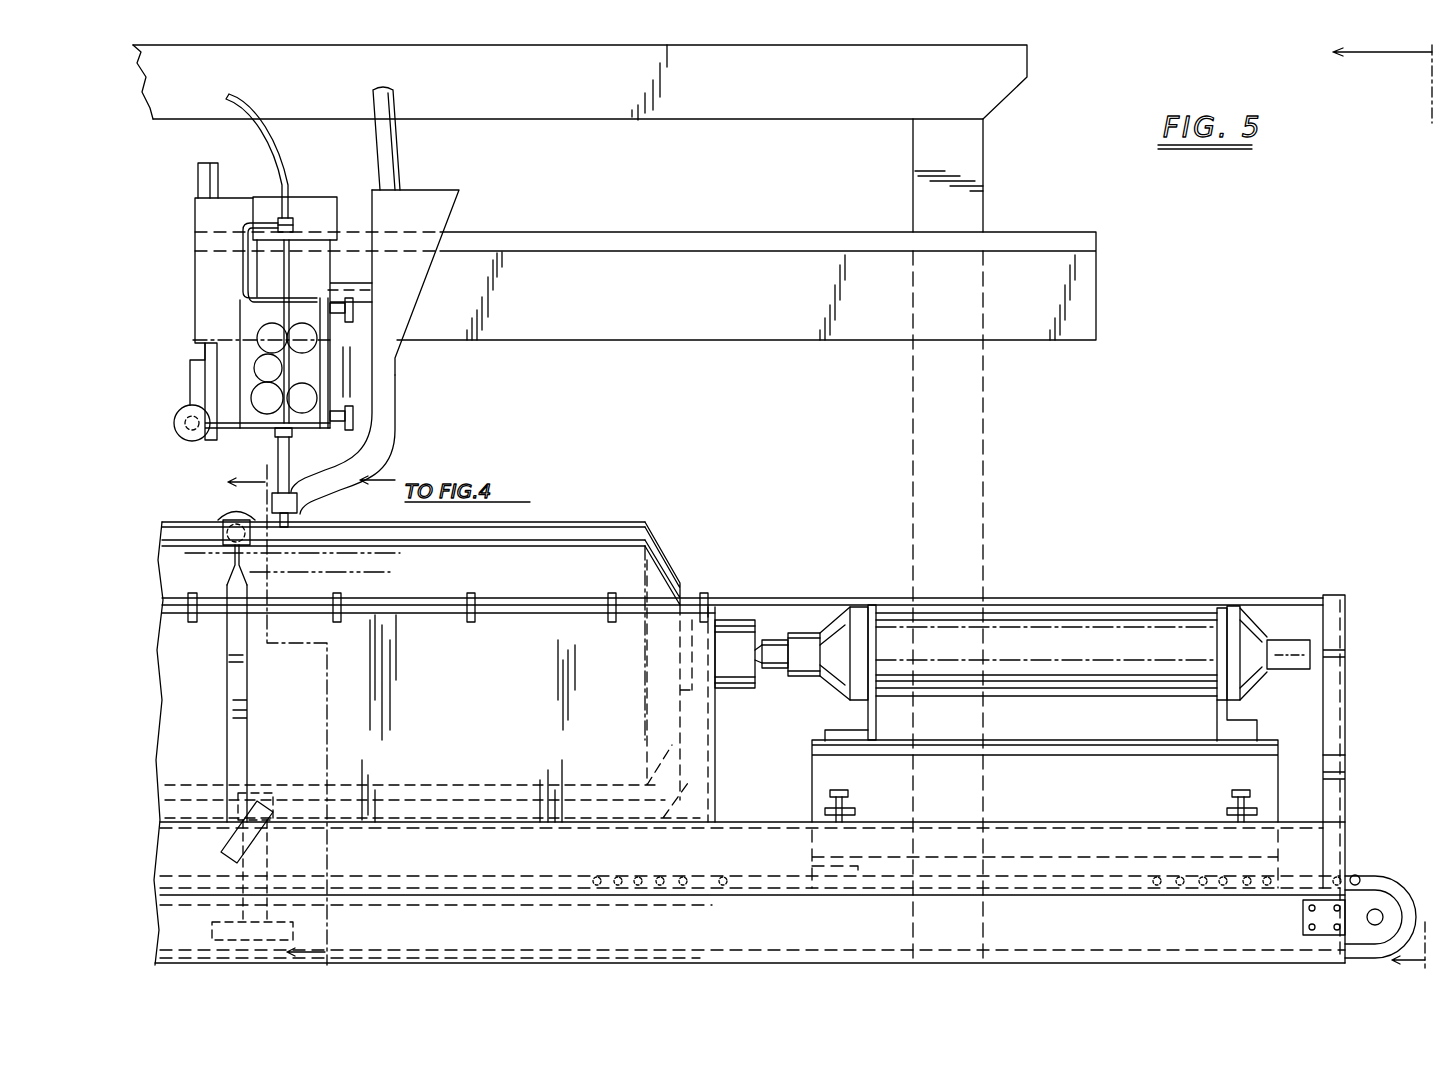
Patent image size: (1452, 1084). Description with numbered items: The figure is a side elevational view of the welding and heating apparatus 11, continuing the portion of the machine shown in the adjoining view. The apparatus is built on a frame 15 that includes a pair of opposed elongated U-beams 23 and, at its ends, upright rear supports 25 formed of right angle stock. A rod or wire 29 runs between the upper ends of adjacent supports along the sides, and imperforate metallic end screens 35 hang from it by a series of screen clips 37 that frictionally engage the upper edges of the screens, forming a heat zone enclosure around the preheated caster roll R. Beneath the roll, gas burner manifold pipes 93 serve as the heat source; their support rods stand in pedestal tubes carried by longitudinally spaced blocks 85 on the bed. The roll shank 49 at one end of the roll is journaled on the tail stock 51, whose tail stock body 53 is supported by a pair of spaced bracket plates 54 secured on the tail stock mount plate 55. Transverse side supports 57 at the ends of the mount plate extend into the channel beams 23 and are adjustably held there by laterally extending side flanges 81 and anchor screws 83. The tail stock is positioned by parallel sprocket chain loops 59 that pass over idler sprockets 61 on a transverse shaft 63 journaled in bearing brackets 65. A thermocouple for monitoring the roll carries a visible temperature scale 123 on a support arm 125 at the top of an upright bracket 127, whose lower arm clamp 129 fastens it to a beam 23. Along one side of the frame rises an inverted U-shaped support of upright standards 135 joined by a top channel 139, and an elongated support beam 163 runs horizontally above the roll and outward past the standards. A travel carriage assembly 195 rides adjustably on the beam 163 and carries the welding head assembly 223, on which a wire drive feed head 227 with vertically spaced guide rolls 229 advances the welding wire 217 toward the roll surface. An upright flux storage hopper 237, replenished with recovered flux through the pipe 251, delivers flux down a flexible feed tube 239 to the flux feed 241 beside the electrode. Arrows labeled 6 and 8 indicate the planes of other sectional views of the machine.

The top channel 139 is at (737, 103).
The upright standards 135 is at (985, 436).
The support beam 163 is at (725, 263).
The travel carriage assembly 195 is at (233, 198).
The welding head assembly 223 is at (317, 203).
The welding wire 217 is at (253, 110).
The pipe 251 is at (390, 165).
The flux storage hopper 237 is at (440, 208).
The flexible feed tube 239 is at (388, 418).
The guide rolls 229 is at (262, 333).
The wire drive feed head 227 is at (338, 398).
The flux feed 241 is at (297, 513).
The temperature scale 123 is at (227, 510).
The upright bracket 127 is at (235, 562).
The support arm 125 is at (248, 748).
The arm clamp 129 is at (250, 830).
The blocks 85 is at (210, 934).
The section line 8- 8 is at (277, 707).
The screen clips 37 is at (470, 597).
The end screens 35 is at (515, 642).
The gas burner manifold pipes 93 is at (662, 800).
The roll shank 49 is at (735, 632).
The tail stock 51 is at (808, 632).
The tail stock body 53 is at (1090, 630).
The bracket plates 54 is at (1225, 724).
The tail stock mount plate 55 is at (1090, 803).
The anchor screws 83 is at (845, 792).
The side flanges 81 is at (857, 812).
The support wire 29 is at (1302, 597).
The rear supports 25 is at (1347, 757).
The U-beams 23 is at (1335, 828).
The frame 15 is at (1165, 940).
The side supports 57 is at (917, 865).
The sprocket chain loops 59 is at (1358, 874).
The idler sprockets 61 is at (1385, 893).
The transverse shaft 63 is at (1368, 917).
The bearing brackets 65 is at (1303, 928).
The welding and heating apparatus 11 is at (1027, 545).
The section line 6- 6 is at (1382, 506).
The caster roll R is at (578, 522).